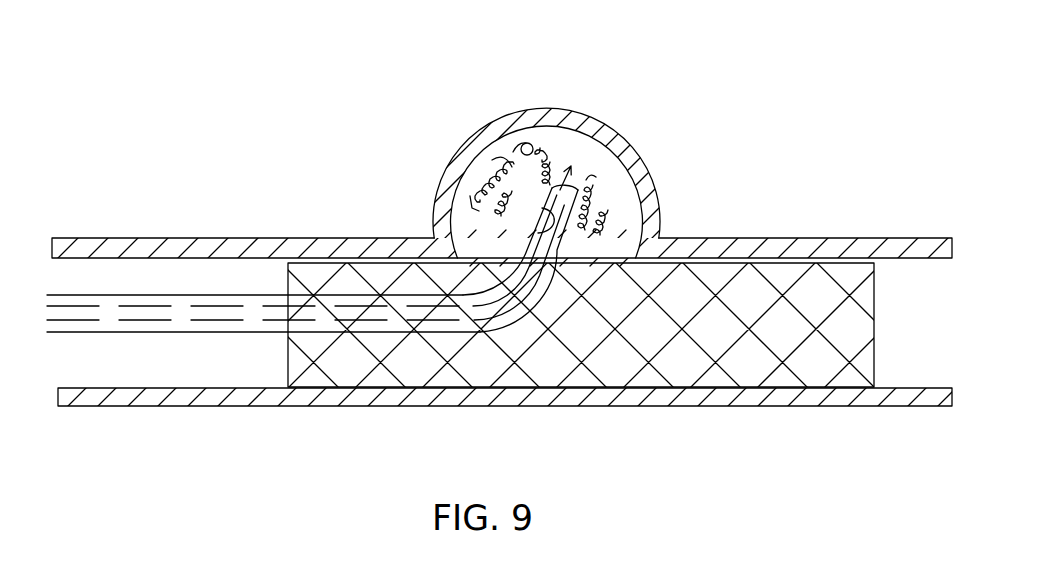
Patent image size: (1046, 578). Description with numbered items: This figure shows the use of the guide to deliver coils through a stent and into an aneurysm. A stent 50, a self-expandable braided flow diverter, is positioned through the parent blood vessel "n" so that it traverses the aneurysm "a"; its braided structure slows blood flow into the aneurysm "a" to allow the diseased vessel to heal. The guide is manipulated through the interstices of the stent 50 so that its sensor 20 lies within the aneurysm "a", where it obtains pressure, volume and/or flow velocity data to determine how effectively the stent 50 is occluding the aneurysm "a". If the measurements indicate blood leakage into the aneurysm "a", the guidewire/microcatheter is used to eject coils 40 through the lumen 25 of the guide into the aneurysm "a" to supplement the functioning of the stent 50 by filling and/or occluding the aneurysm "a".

The sensor 20 is at (538, 228).
The lumen 25 is at (160, 323).
The coils 40 is at (536, 150).
The stent 50 is at (740, 310).
The aneurysm a is at (640, 180).
The parent vessel n is at (851, 388).